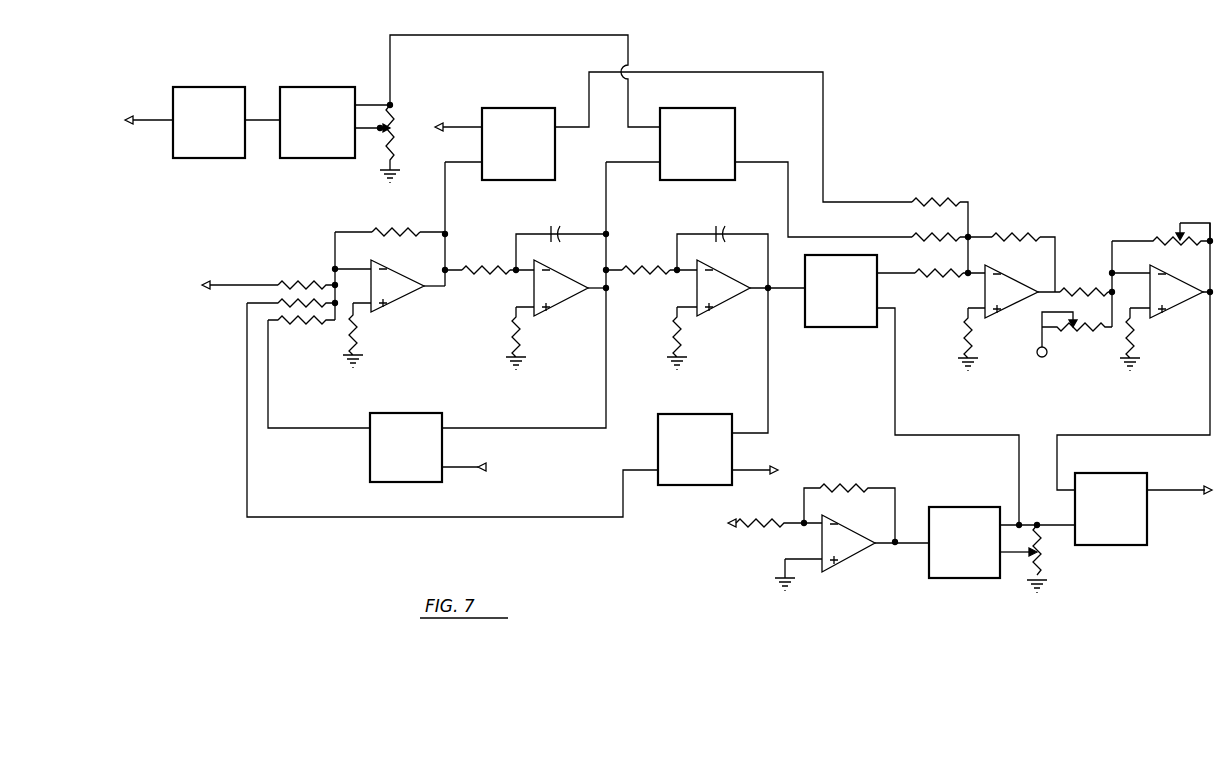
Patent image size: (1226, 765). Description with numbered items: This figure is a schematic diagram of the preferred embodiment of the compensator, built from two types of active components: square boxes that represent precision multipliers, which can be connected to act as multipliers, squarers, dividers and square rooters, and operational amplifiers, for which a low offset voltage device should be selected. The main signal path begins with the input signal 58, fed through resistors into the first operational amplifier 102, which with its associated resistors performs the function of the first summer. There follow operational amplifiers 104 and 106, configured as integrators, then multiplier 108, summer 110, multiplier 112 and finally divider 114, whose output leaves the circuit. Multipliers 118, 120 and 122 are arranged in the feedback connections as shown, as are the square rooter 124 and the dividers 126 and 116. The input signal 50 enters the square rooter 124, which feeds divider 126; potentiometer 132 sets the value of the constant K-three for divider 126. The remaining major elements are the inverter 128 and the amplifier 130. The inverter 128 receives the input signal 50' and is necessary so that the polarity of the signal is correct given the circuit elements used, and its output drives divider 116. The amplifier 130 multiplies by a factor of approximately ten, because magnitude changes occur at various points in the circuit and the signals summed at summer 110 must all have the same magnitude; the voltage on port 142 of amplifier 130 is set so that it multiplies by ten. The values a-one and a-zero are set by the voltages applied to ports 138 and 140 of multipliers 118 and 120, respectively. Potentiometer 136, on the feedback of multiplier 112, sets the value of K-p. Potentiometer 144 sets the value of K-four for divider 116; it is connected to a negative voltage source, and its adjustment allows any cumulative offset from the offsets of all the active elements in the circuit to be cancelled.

The input signal 50 is at (141, 96).
The input signal 50' is at (755, 540).
The input signal 58 is at (205, 284).
The first operational amplifier 102 is at (400, 300).
The operational amplifier integrator 104 is at (560, 304).
The operational amplifier integrator 106 is at (730, 304).
The multiplier 108 is at (840, 327).
The summer 110 is at (1008, 310).
The multiplier 112 is at (1176, 320).
The divider 114 is at (1140, 545).
The divider 116 is at (960, 578).
The multiplier 118 is at (703, 485).
The multiplier 120 is at (395, 482).
The multiplier 122 is at (690, 180).
The square rooter 124 is at (209, 87).
The divider 126 is at (318, 87).
The inverter 128 is at (855, 560).
The amplifier 130 is at (520, 180).
The potentiometer 132 is at (392, 113).
The potentiometer 136 is at (1176, 234).
The port 138 is at (486, 467).
The port 140 is at (776, 466).
The port 142 is at (438, 126).
The potentiometer 144 is at (1100, 330).